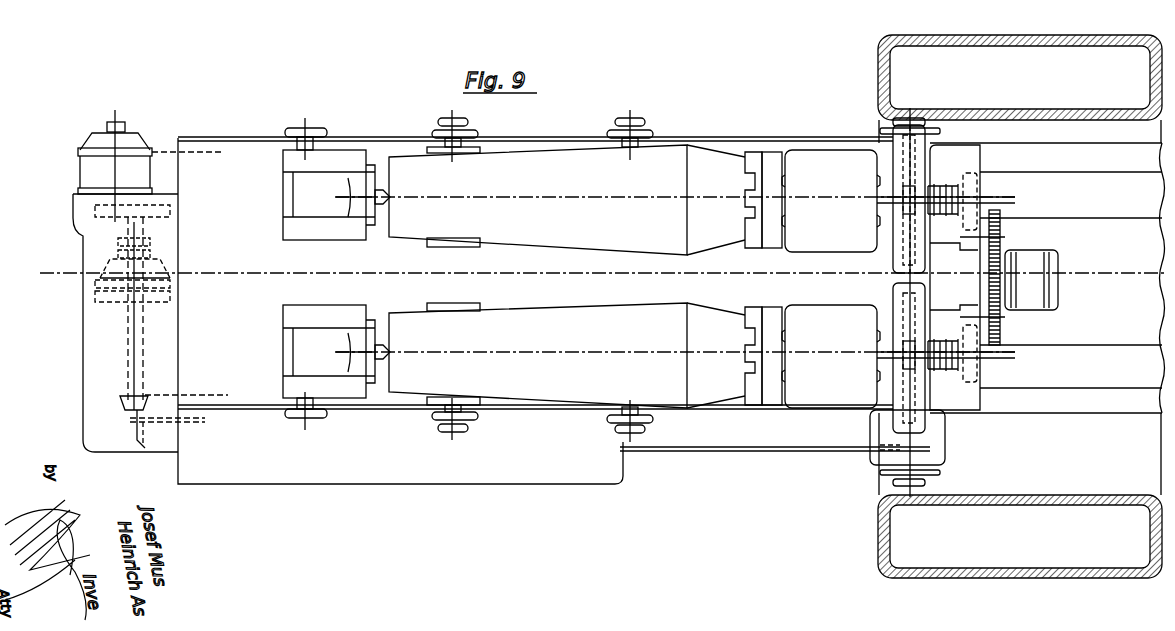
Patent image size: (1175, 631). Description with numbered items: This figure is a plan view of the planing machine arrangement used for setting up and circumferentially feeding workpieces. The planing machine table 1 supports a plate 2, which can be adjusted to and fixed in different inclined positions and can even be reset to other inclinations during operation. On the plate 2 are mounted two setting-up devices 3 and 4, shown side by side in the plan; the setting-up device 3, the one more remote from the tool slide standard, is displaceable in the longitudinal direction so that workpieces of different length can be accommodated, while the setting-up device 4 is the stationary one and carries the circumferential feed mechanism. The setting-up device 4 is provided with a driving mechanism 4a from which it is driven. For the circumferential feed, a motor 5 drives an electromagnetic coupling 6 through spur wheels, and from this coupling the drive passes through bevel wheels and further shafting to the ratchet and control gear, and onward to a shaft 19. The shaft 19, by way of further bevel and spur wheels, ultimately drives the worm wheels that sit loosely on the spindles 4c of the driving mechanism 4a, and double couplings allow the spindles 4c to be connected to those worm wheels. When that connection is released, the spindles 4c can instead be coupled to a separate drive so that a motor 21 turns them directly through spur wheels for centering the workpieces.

The planing machine table 1 is at (158, 157).
The plate 2 is at (423, 264).
The setting-up device 3 is at (322, 199).
The setting-up device 4 is at (822, 337).
The driving mechanism 4a is at (938, 232).
The spindle 4c is at (1022, 193).
The motor 5 is at (95, 145).
The electromagnetic coupling 6 is at (110, 275).
The shaft 19 is at (725, 448).
The motor 21 is at (1040, 279).